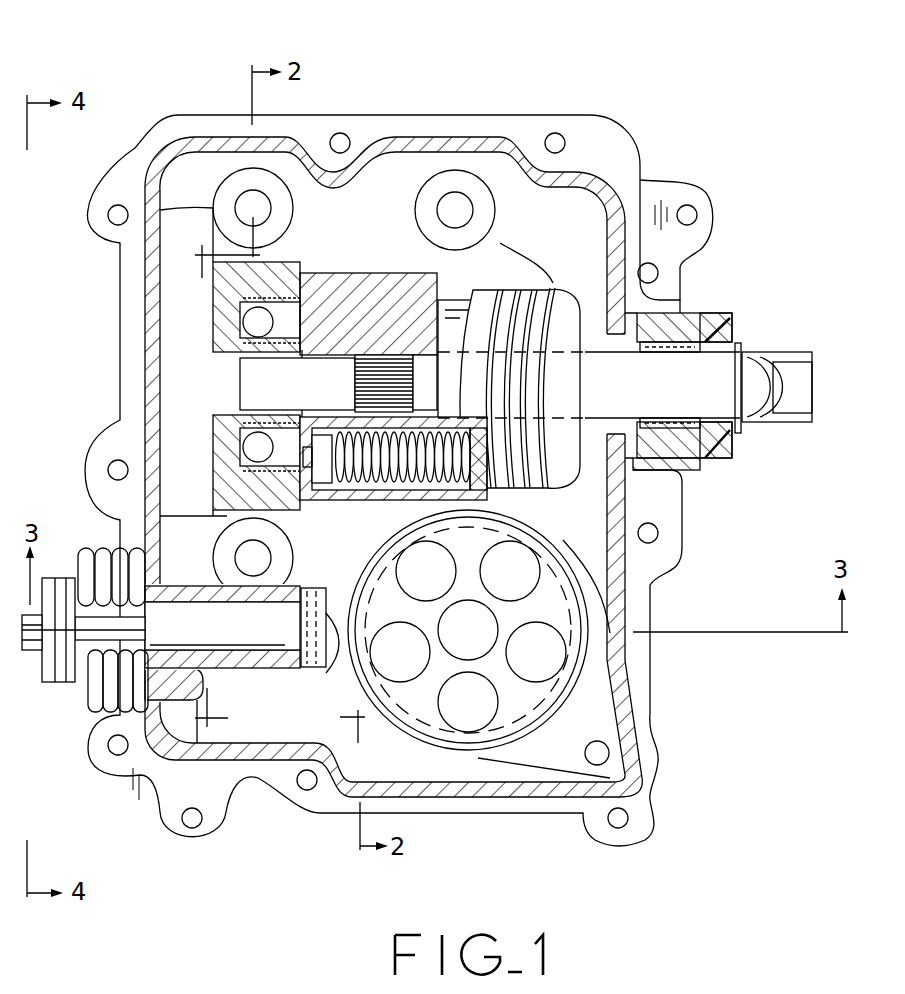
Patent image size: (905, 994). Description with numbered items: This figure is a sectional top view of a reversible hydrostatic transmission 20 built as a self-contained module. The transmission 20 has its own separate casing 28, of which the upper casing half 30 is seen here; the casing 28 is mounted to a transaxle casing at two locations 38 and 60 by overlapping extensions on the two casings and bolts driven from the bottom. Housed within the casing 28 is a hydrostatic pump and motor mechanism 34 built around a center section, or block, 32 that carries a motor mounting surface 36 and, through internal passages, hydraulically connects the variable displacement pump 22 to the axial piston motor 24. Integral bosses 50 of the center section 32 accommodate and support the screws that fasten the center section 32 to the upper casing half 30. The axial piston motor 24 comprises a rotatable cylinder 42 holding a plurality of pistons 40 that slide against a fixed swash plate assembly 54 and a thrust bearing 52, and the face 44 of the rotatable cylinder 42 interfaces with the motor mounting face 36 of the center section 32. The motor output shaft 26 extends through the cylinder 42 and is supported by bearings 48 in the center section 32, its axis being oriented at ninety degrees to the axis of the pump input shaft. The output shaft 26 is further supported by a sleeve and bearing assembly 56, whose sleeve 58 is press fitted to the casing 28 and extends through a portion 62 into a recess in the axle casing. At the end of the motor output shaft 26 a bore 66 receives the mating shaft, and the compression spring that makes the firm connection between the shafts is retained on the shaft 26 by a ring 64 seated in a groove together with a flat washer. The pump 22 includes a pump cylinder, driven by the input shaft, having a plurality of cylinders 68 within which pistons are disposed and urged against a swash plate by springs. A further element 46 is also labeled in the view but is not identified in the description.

The hydrostatic transmission 20 is at (157, 82).
The variable displacement pump 22 is at (478, 770).
The axial piston motor 24 is at (393, 253).
The motor output shaft 26 is at (260, 378).
The casing 28 is at (566, 112).
The upper casing half 30 is at (130, 298).
The center section 32 is at (160, 515).
The hydrostatic pump and motor mechanism 34 is at (332, 290).
The motor mounting surface 36 is at (340, 111).
The mounting location 38 is at (158, 822).
The pistons 40 is at (485, 457).
The rotatable cylinder 42 is at (357, 238).
The face of rotatable cylinder 44 is at (290, 495).
The lower bearing 46 is at (300, 462).
The bearings 48 is at (240, 330).
The integral bosses 50 is at (160, 210).
The thrust bearing 52 is at (490, 292).
The fixed swash plate assembly 54 is at (548, 292).
The sleeve and bearing assembly 56 is at (704, 296).
The sleeve 58 is at (684, 297).
The mounting location 60 is at (698, 183).
The portion 62 is at (700, 462).
The ring 64 is at (740, 427).
The bore 66 is at (800, 370).
The cylinders 68 is at (553, 667).